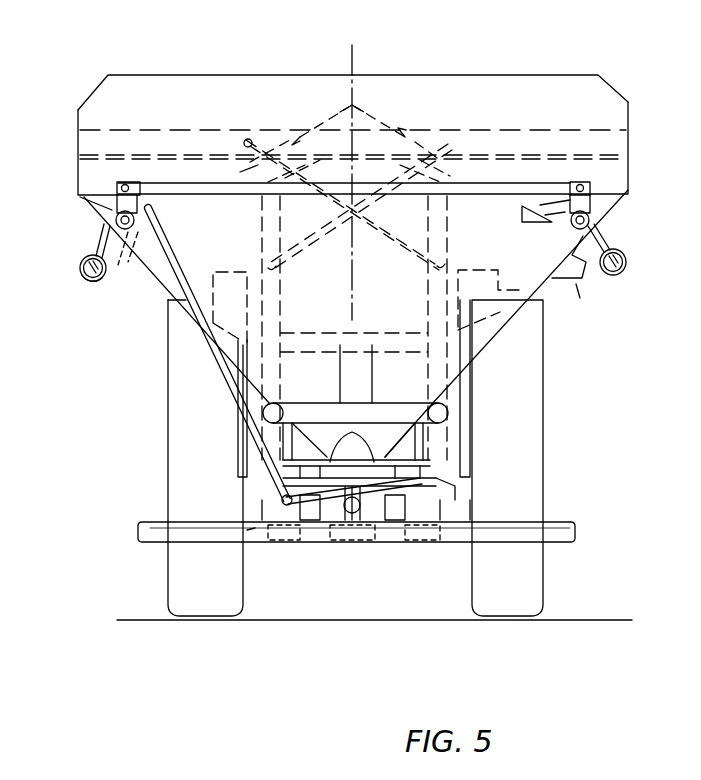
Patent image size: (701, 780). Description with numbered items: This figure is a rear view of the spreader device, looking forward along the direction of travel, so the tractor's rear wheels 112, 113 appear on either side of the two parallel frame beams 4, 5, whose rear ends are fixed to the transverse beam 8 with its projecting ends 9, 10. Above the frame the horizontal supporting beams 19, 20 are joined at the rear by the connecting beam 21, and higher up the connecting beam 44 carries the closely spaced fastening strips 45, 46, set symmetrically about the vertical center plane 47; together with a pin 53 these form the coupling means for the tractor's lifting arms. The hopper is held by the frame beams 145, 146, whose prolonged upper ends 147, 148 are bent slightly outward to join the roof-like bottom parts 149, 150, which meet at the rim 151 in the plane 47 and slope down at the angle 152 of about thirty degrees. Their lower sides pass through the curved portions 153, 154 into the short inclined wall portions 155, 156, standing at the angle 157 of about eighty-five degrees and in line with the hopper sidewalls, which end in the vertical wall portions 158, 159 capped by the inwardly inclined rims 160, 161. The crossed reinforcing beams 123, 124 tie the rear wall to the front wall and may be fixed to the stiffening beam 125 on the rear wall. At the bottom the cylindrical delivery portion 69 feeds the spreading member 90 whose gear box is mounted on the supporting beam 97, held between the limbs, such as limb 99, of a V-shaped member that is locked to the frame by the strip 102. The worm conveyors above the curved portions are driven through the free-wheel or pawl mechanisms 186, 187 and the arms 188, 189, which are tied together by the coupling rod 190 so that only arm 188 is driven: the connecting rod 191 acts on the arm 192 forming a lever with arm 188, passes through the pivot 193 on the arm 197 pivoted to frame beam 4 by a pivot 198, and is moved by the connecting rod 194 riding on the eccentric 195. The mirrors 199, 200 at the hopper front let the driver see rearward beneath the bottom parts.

The frame beam 4 is at (268, 545).
The frame beam 5 is at (460, 540).
The transverse beam 8 is at (158, 553).
The end of transverse beam 9 is at (138, 530).
The end of transverse beam 10 is at (498, 521).
The horizontal supporting beam 19 is at (262, 415).
The horizontal supporting beam 20 is at (450, 410).
The connecting beam 21 is at (397, 408).
The connecting beam 44 is at (326, 333).
The fastening strip 45 is at (338, 372).
The fastening strip 46 is at (374, 375).
The vertical plane 47 is at (352, 62).
The pin 53 is at (468, 510).
The cylindrical delivery portion 69 is at (338, 426).
The spreading member 90 is at (440, 492).
The supporting beam 97 is at (383, 528).
The limb 99 is at (402, 530).
The strip 102 is at (353, 442).
The rear wheel 112 is at (170, 388).
The rear wheel 113 is at (532, 437).
The reinforcing beam 123 is at (309, 172).
The reinforcing beam 124 is at (407, 172).
The stiffening beam 125 is at (183, 131).
The frame beam 145 is at (258, 222).
The frame beam 146 is at (440, 232).
The upper end of frame beam 147 is at (256, 177).
The upper end of frame beam 148 is at (458, 172).
The bottom part 149 is at (301, 130).
The bottom part 150 is at (408, 116).
The rim 151 is at (348, 103).
The angle 152 is at (522, 214).
The curved portion 153 is at (88, 282).
The curved portion 154 is at (574, 243).
The inclined wall portion 155 is at (112, 216).
The inclined wall portion 156 is at (605, 208).
The angle 157 is at (591, 298).
The vertical wall portion 158 is at (78, 126).
The vertical wall portion 159 is at (628, 128).
The inclined rim 160 is at (100, 84).
The inclined rim 161 is at (612, 84).
The free-wheel or pawl mechanism 186 is at (84, 199).
The free-wheel or pawl mechanism 187 is at (551, 203).
The arm 188 is at (114, 192).
The arm 189 is at (590, 188).
The coupling rod 190 is at (348, 204).
The connecting rod 191 is at (174, 264).
The arm 192 is at (124, 266).
The pivot 193 is at (282, 498).
The connecting rod 194 is at (335, 525).
The eccentric 195 is at (353, 524).
The arm 197 is at (275, 512).
The link 198 is at (255, 528).
The mirror 199 is at (80, 265).
The mirror 200 is at (626, 265).